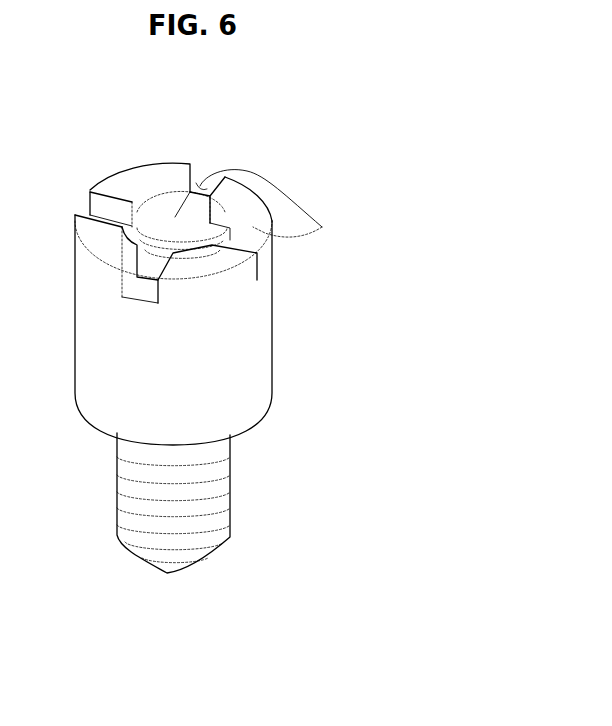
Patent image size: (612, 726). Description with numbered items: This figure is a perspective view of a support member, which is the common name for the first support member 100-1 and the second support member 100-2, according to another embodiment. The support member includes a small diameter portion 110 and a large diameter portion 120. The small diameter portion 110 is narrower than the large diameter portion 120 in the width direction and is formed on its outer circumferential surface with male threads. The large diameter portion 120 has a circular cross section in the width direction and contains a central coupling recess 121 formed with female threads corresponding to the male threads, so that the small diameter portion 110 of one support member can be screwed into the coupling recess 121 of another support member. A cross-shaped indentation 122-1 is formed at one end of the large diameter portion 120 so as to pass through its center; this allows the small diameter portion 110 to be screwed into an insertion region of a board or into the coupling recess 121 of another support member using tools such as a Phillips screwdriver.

The first support member 100-1 is at (247, 347).
The second support member 100-2 is at (427, 158).
The small diameter portion 110 is at (222, 503).
The large diameter portion 120 is at (250, 338).
The coupling recess 121 is at (103, 192).
The cross-shaped indentation 122-1 is at (322, 227).